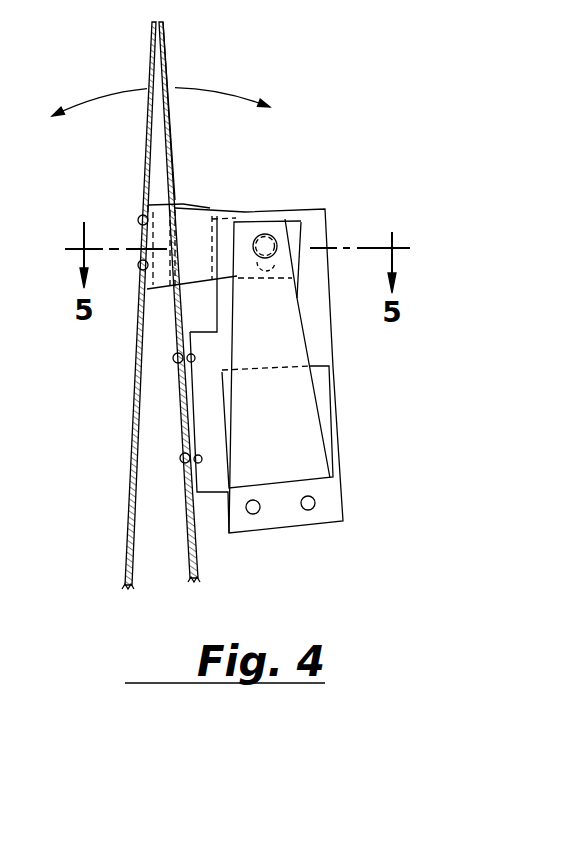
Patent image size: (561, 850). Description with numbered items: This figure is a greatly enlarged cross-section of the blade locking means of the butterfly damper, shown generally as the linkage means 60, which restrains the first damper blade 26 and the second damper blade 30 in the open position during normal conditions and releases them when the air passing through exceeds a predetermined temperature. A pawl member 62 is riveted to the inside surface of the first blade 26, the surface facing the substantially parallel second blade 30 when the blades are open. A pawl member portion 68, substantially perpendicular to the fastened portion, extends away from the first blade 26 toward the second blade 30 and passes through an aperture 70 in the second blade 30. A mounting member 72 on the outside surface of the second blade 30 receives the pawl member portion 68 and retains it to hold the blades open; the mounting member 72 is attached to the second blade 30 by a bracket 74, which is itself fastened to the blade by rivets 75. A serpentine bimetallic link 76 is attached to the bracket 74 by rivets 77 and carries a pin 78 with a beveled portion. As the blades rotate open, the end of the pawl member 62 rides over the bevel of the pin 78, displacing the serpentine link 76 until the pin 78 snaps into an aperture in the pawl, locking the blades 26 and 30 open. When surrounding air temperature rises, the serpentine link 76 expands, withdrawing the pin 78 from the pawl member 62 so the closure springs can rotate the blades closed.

The first damper blade 26 is at (135, 417).
The second damper blade 30 is at (192, 532).
The linkage means 60 is at (296, 191).
The pawl member 62 is at (188, 222).
The pawl member portion 68 is at (205, 222).
The aperture 70 is at (175, 192).
The mounting member 72 is at (336, 224).
The bracket 74 is at (213, 485).
The rivets 75 is at (176, 364).
The serpentine bimetallic link 76 is at (322, 392).
The rivets 77 is at (253, 508).
The pin 78 is at (270, 240).